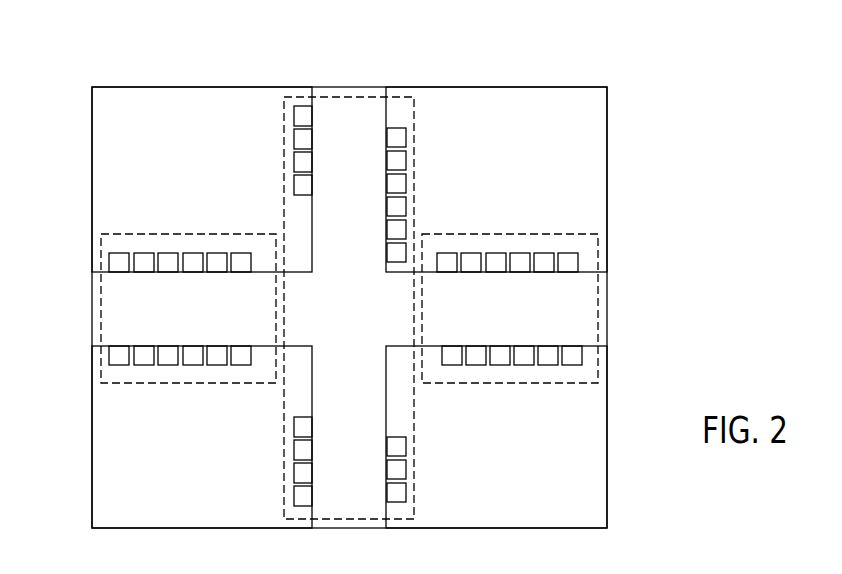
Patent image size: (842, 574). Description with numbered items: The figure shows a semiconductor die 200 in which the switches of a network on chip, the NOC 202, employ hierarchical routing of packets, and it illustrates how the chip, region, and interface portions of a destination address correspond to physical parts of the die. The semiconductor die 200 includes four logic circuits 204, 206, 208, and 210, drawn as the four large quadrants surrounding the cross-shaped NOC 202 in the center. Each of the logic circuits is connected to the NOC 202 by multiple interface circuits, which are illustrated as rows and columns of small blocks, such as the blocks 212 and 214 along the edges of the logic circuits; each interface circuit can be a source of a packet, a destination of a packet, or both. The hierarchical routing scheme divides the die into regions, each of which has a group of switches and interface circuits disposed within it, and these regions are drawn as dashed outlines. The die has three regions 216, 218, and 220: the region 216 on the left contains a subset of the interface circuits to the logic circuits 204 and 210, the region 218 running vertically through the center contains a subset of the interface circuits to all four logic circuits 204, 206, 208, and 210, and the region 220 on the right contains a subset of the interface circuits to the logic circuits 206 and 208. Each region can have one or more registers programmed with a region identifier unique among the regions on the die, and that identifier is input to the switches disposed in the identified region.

The semiconductor die 200 is at (676, 58).
The NOC 202 is at (336, 348).
The logic circuit 204 is at (189, 200).
The logic circuit 206 is at (483, 200).
The logic circuit 208 is at (483, 456).
The logic circuit 210 is at (189, 456).
The block 212 is at (106, 353).
The block 214 is at (579, 262).
The region 216 is at (101, 305).
The region 218 is at (284, 520).
The region 220 is at (598, 293).